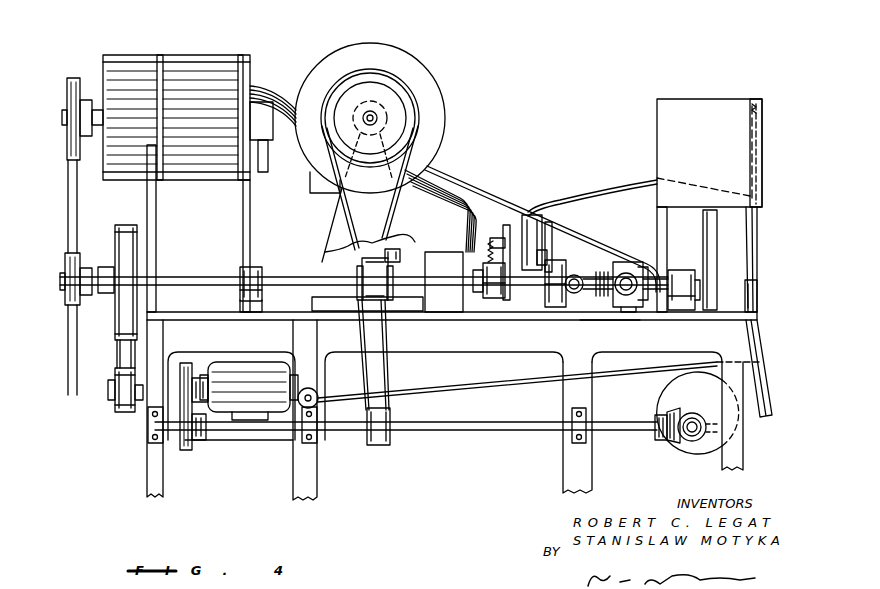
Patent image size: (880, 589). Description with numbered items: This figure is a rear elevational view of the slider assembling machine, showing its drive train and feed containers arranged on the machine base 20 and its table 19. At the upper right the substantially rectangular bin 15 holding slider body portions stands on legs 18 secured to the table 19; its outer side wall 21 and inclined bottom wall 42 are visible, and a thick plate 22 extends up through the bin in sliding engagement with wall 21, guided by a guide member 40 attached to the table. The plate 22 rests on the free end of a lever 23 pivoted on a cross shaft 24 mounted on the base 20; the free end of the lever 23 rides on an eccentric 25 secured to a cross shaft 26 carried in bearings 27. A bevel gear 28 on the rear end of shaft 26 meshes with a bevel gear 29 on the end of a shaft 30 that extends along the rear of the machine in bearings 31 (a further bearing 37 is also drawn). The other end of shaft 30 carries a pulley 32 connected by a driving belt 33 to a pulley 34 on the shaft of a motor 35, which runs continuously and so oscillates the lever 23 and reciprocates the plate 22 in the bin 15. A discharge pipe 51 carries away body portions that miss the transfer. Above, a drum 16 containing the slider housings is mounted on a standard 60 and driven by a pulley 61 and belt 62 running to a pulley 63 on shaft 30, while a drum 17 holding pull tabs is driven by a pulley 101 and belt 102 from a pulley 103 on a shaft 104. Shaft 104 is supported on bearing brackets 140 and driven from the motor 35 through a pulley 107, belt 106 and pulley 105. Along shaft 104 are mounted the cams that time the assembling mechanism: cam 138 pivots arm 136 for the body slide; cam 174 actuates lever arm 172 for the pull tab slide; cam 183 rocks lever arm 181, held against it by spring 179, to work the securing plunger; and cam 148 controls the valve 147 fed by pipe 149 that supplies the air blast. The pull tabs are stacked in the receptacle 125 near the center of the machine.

The bin 15 is at (723, 101).
The drum 16 is at (392, 39).
The drum 17 is at (118, 51).
The legs 18 is at (668, 230).
The table 19 is at (594, 318).
The machine base 20 is at (565, 468).
The outer side wall 21 is at (762, 158).
The thick plate 22 is at (760, 228).
The lever 23 is at (530, 380).
The cross shaft 24 is at (306, 388).
The eccentric 25 is at (652, 413).
The cross shaft 26 is at (697, 442).
The bearings 27 is at (724, 438).
The bevel gear 28 is at (684, 444).
The bevel gear 29 is at (660, 440).
The shaft 30 is at (468, 432).
The bearings 31 is at (150, 432).
The pulley 32 is at (193, 446).
The driving belt 33 is at (186, 372).
The pulley 34 is at (192, 370).
The motor 35 is at (246, 366).
The bearing 37 is at (302, 440).
The guide member 40 is at (757, 285).
The inclined bottom wall 42 is at (660, 182).
The discharge pipe 51 is at (764, 390).
The standard 60 is at (335, 233).
The pulley 61 is at (405, 98).
The belt 62 is at (328, 207).
The pulley 63 is at (388, 408).
The pulley 101 is at (66, 90).
The belt 102 is at (68, 178).
The pulley 103 is at (64, 262).
The shaft 104 is at (189, 276).
The pulley 105 is at (112, 312).
The belt 106 is at (114, 350).
The pulley 107 is at (113, 400).
The receptacle 125 is at (445, 305).
The arm 136 is at (546, 250).
The cam 138 is at (566, 262).
The bearing brackets 140 is at (260, 276).
The valve 147 is at (626, 308).
The cam 148 is at (626, 262).
The pipe 149 is at (578, 290).
The lever arm 172 is at (398, 258).
The cam 174 is at (375, 258).
The spring 179 is at (486, 244).
The lever arm 181 is at (506, 224).
The cam 183 is at (495, 300).